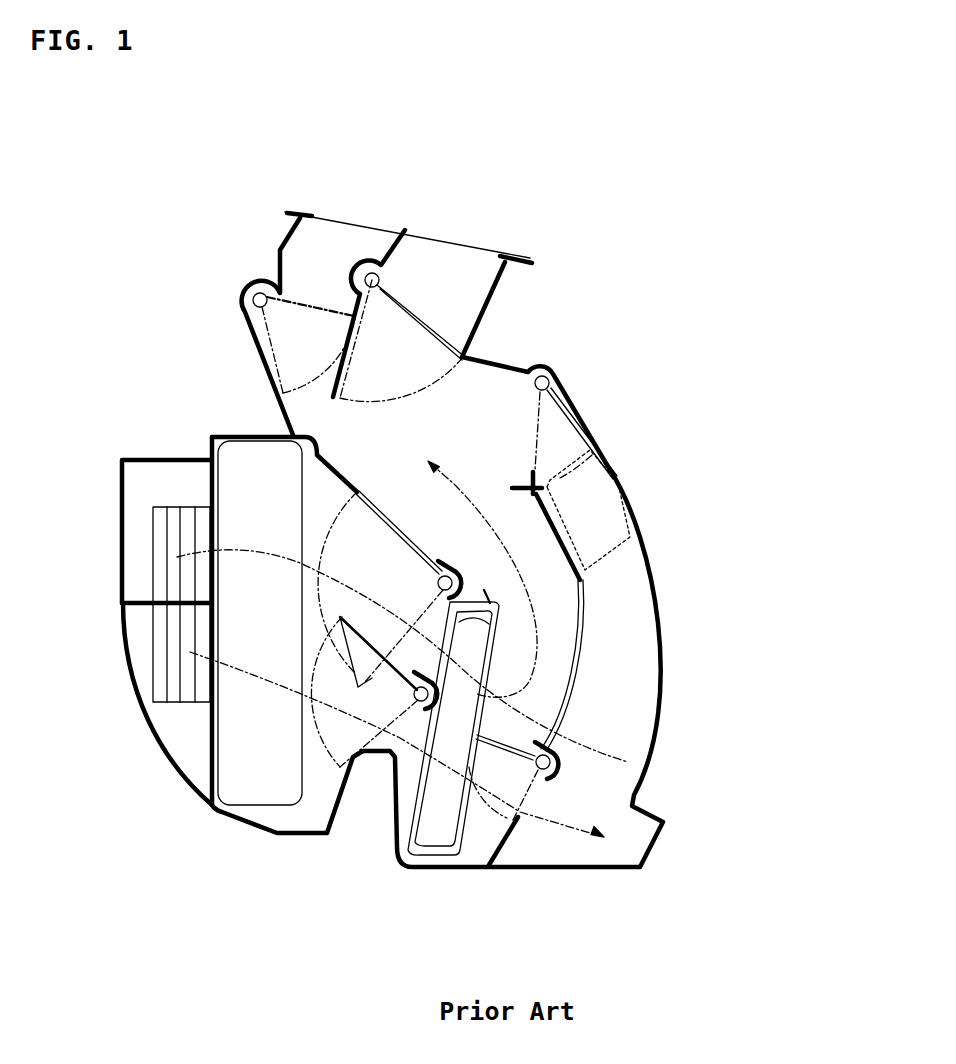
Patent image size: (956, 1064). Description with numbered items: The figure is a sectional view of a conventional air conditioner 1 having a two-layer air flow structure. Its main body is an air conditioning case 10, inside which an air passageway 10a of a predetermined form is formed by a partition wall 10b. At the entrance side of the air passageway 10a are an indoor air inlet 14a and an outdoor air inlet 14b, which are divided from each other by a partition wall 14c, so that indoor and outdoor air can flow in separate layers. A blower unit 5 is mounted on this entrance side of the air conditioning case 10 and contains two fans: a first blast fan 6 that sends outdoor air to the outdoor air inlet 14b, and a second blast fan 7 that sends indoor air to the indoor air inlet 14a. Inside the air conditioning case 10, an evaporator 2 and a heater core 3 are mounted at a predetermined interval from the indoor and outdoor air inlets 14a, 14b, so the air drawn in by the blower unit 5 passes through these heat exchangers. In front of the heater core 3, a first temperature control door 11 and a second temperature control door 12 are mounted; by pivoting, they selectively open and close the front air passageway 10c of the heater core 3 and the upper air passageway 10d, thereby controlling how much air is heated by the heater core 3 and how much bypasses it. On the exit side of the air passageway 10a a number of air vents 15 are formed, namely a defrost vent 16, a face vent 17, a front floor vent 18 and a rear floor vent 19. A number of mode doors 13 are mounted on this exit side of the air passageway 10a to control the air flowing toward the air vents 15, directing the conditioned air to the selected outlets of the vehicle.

The air conditioner 1 is at (655, 386).
The evaporator 2 is at (268, 795).
The heater core 3 is at (437, 833).
The blower unit 5 is at (160, 498).
The first blast fan 6 is at (153, 523).
The second blast fan 7 is at (153, 693).
The air conditioning case 10 is at (657, 590).
The air passageway 10a is at (630, 557).
The partition wall 10b is at (573, 667).
The front air passageway 10c is at (445, 655).
The upper air passageway 10d is at (398, 497).
The first temperature control door 11 is at (400, 540).
The second temperature control door 12 is at (355, 615).
The mode door 13 is at (437, 320).
The indoor air inlet 14a is at (132, 663).
The outdoor air inlet 14b is at (133, 570).
The partition wall 14c is at (133, 607).
The air vents 15 is at (290, 141).
The defrost vent 16 is at (320, 252).
The face vent 17 is at (420, 262).
The front floor vent 18 is at (617, 472).
The rear floor vent 19 is at (645, 838).